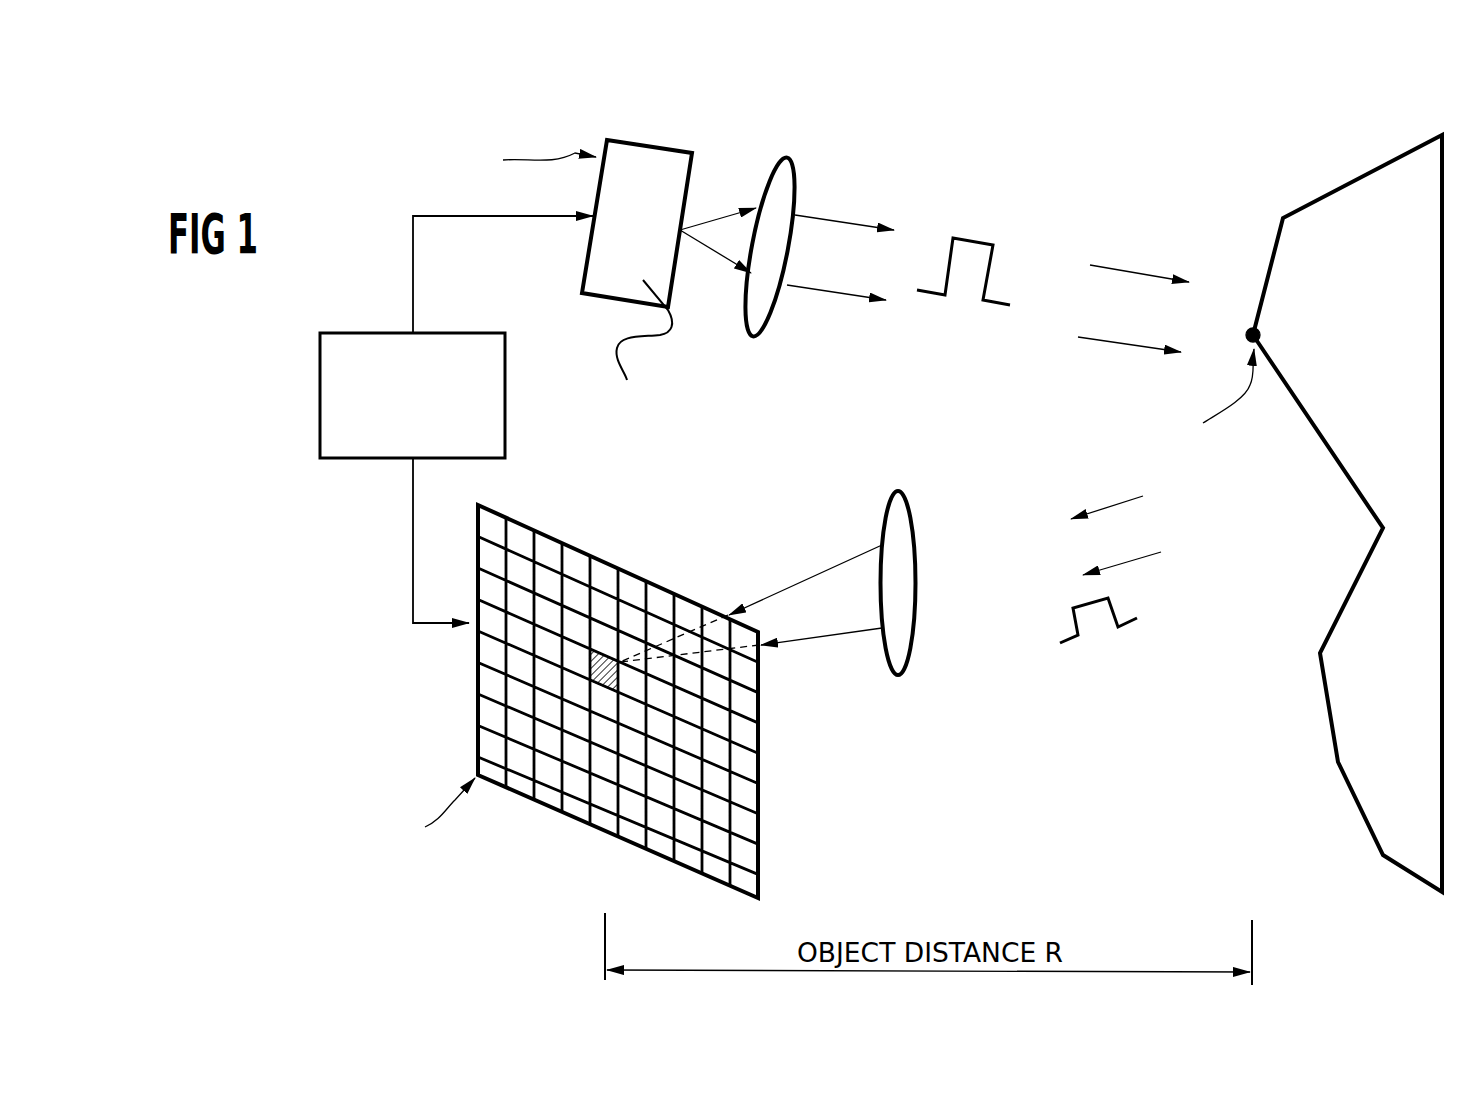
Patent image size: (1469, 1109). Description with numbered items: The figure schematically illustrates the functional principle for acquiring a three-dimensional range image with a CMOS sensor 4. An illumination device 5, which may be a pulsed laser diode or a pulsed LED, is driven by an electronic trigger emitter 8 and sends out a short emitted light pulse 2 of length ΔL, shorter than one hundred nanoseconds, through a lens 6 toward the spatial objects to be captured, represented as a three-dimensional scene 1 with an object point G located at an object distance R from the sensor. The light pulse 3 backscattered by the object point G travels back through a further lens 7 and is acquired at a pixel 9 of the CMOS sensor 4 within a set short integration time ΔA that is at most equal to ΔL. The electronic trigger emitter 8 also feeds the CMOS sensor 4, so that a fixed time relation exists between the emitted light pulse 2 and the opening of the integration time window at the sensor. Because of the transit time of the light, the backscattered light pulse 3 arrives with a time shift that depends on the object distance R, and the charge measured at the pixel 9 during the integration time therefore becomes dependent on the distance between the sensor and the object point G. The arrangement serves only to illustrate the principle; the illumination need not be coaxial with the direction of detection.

The three-dimensional scene 1 is at (1382, 823).
The emitted light pulse 2 is at (982, 231).
The backscattered light pulse 3 is at (1098, 634).
The CMOS sensor 4 is at (464, 733).
The illumination device 5 is at (668, 166).
The lens 6 is at (771, 303).
The lens 7 is at (897, 508).
The electronic trigger emitter 8 is at (506, 397).
The pixel 9 is at (725, 825).